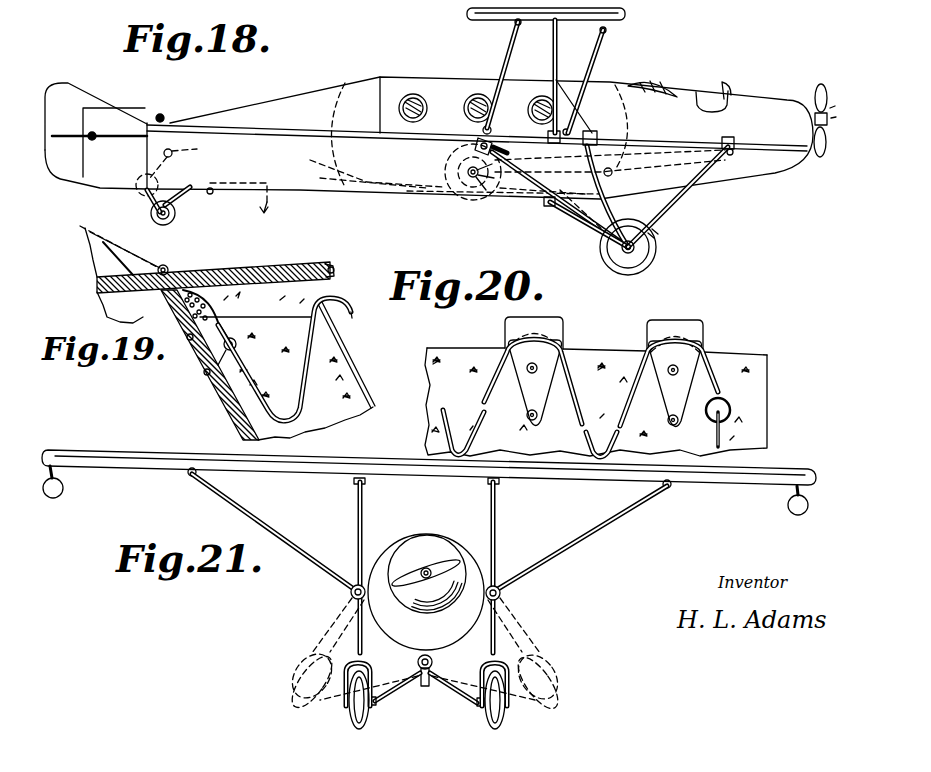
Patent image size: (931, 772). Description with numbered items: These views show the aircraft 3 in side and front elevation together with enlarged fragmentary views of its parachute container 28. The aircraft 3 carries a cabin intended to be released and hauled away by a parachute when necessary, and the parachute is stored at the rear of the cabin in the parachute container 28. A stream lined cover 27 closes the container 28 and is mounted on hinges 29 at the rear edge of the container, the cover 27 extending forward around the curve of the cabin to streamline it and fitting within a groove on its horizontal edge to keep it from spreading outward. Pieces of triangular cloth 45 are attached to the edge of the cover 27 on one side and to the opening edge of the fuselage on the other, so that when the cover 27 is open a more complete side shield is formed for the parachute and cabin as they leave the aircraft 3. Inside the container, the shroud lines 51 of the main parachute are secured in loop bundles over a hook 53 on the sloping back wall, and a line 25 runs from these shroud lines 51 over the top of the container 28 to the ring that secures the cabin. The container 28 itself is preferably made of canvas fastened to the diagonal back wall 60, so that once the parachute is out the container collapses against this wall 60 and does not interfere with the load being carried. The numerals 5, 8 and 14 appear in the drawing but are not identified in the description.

In FIG. 18, the aircraft 3 is at (731, 180).
In FIG. 18, the wing 5 is at (700, 8).
In FIG. 18, the wing strut 8 is at (534, 79).
In FIG. 18, the porthole window 14 is at (468, 101).
In FIG. 19, the line 25 is at (352, 314).
In FIG. 20, the line 25 is at (723, 434).
In FIG. 18, the stream lined cover 27 is at (300, 92).
In FIG. 19, the stream lined cover 27 is at (270, 264).
In FIG. 19, the parachute container 28 is at (284, 359).
In FIG. 18, the hinges 29 is at (172, 108).
In FIG. 19, the hinges 29 is at (168, 267).
In FIG. 19, the triangular cloth 45 is at (334, 270).
In FIG. 20, the shroud lines 51 is at (710, 392).
In FIG. 19, the hook 53 is at (287, 366).
In FIG. 20, the hook 53 is at (645, 332).
In FIG. 19, the diagonal back wall 60 is at (226, 401).
In FIG. 20, the diagonal back wall 60 is at (580, 398).